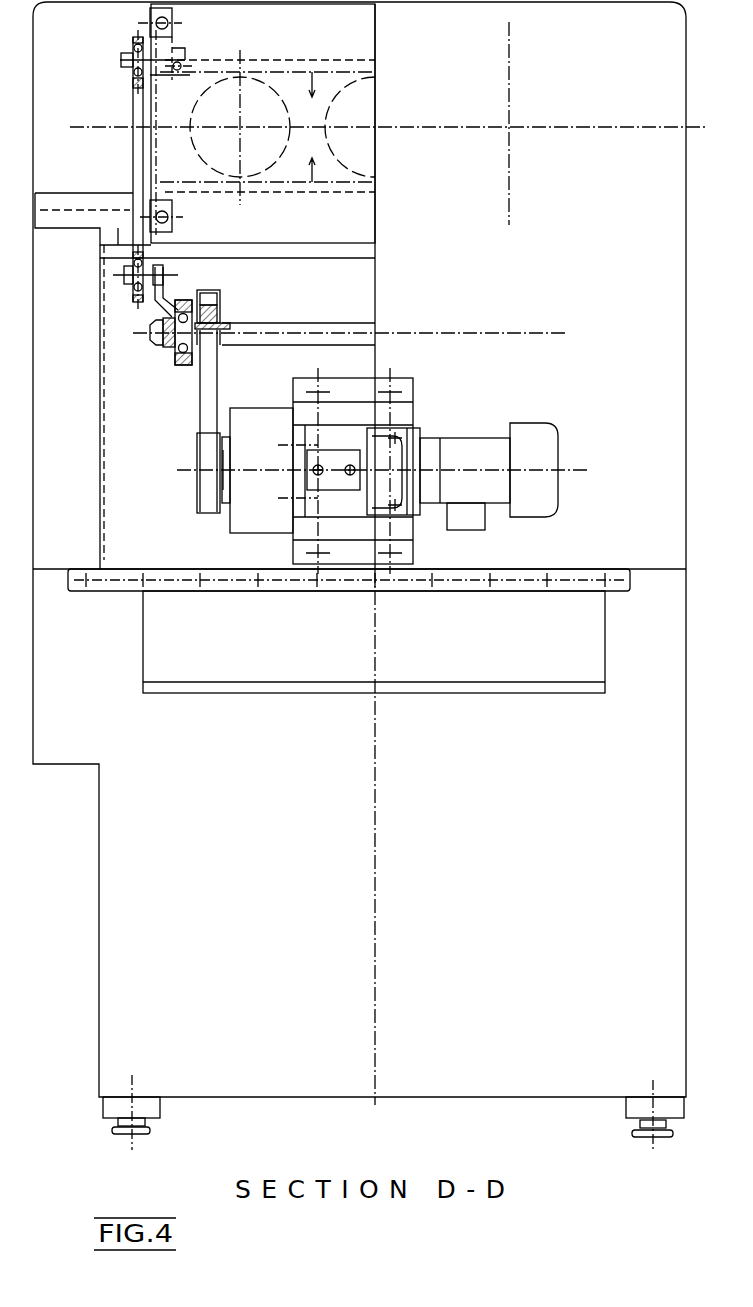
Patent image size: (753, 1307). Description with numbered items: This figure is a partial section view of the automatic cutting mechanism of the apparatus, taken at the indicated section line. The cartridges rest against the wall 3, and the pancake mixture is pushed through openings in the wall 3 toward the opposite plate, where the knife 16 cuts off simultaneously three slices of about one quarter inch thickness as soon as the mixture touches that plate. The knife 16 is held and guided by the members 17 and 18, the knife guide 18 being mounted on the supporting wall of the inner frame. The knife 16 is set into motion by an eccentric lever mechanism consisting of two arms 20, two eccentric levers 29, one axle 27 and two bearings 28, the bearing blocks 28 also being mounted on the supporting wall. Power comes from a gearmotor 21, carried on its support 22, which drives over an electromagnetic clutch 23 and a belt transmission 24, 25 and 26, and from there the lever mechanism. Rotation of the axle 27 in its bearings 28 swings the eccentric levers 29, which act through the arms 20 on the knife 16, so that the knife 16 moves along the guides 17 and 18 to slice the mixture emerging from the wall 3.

The wall 3 is at (375, 228).
The knife 16 is at (375, 40).
The holding and guiding member 17 is at (183, 55).
The knife guide 18 is at (172, 210).
The arm 20 is at (133, 167).
The gearmotor 21 is at (458, 437).
The support 22 is at (415, 392).
The electromagnetic clutch 23 is at (230, 527).
The belt transmission 24 is at (197, 490).
The belt transmission 25 is at (222, 305).
The belt transmission 26 is at (200, 418).
The axle 27 is at (375, 323).
The bearing 28 is at (183, 368).
The eccentric lever 29 is at (155, 312).